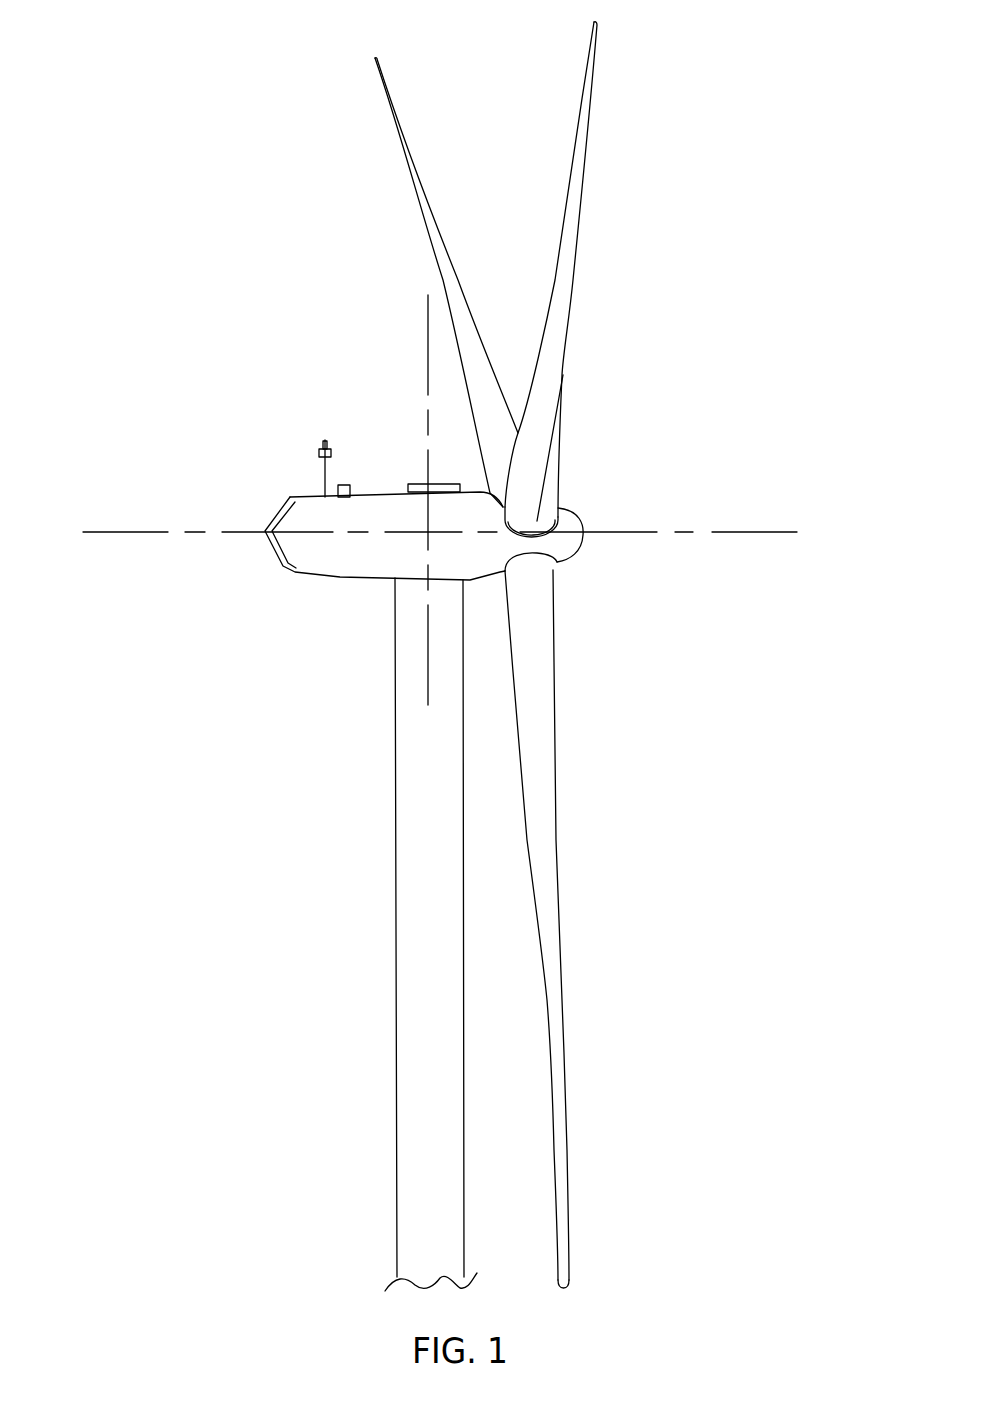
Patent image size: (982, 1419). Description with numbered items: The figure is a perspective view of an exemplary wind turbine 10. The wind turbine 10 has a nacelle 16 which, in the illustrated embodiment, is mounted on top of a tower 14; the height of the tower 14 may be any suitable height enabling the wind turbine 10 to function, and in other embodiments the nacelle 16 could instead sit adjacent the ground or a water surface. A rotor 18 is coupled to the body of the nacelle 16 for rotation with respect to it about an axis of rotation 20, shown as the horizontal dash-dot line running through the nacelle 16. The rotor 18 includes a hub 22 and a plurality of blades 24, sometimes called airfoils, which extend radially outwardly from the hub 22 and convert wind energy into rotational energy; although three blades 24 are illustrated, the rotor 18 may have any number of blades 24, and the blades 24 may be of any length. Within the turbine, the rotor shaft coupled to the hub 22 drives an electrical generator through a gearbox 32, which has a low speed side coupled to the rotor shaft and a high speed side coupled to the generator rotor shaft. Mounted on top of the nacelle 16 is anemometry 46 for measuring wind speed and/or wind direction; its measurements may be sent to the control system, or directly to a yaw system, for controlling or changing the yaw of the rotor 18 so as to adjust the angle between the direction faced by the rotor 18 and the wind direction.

The wind turbine 10 is at (226, 289).
The tower 14 is at (396, 877).
The nacelle 16 is at (333, 581).
The rotor 18 is at (580, 602).
The axis of rotation 20 is at (737, 532).
The hub 22 is at (575, 548).
The blades 24 is at (413, 148).
The gearbox 32 is at (428, 317).
The anemometry 46 is at (318, 453).